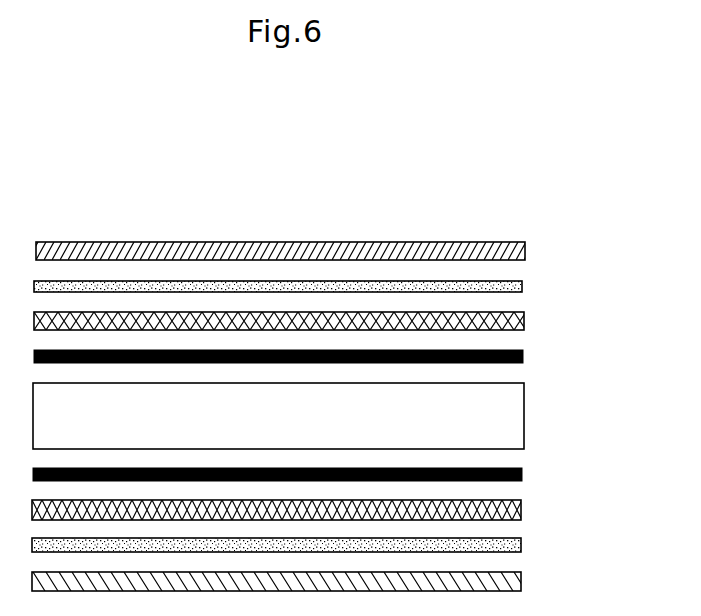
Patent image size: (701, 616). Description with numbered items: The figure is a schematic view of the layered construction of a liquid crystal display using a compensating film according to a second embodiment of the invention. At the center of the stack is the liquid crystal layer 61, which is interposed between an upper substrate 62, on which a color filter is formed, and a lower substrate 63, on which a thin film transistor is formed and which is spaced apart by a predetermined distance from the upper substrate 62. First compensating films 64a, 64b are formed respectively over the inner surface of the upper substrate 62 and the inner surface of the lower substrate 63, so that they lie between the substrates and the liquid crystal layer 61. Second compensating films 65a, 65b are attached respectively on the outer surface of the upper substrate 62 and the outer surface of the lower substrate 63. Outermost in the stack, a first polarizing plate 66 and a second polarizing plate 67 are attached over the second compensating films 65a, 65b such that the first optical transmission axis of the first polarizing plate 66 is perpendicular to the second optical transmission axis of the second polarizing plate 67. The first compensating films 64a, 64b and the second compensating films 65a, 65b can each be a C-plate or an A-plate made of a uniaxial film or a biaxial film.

The liquid crystal layer 61 is at (524, 416).
The upper substrate 62 is at (524, 321).
The lower substrate 63 is at (521, 510).
The first compensating film 64a is at (523, 356).
The first compensating film 64b is at (522, 474).
The second compensating film 65a is at (522, 286).
The second compensating film 65b is at (521, 545).
The first polarizing plate 66 is at (525, 251).
The second polarizing plate 67 is at (521, 581).